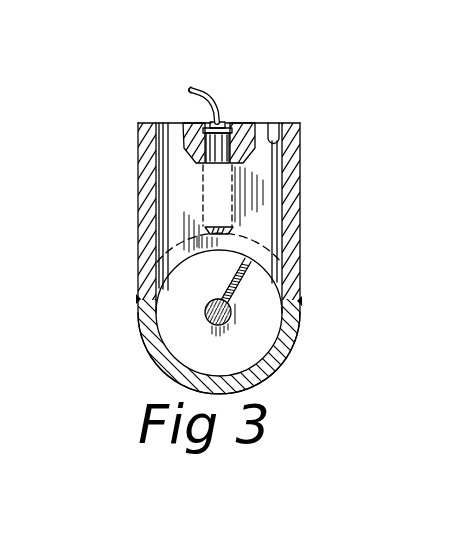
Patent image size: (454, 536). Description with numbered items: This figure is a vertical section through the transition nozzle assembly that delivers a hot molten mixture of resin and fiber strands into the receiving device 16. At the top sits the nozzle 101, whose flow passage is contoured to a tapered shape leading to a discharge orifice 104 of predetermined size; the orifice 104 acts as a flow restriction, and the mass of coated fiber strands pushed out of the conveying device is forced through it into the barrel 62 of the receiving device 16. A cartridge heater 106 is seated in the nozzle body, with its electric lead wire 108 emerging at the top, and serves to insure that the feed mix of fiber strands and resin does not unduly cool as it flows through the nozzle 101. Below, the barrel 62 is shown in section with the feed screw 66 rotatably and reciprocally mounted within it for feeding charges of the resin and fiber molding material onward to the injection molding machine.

The nozzle 101 is at (303, 225).
The discharge orifice 104 is at (270, 123).
The cartridge heater 106 is at (226, 121).
The electric lead wire 108 is at (190, 88).
The receiving device 16 is at (282, 380).
The barrel 62 is at (145, 345).
The feed screw 66 is at (257, 335).